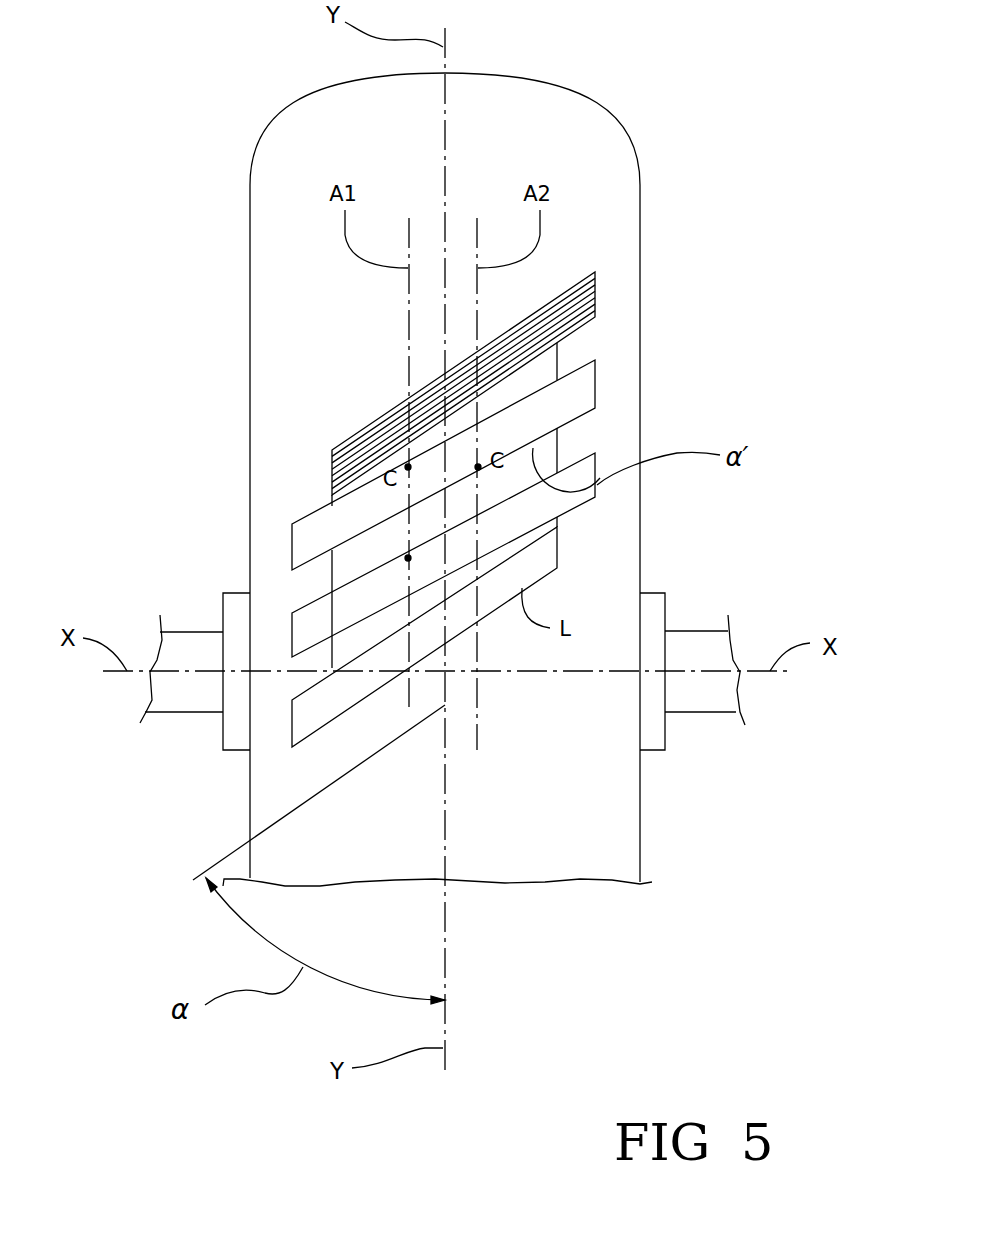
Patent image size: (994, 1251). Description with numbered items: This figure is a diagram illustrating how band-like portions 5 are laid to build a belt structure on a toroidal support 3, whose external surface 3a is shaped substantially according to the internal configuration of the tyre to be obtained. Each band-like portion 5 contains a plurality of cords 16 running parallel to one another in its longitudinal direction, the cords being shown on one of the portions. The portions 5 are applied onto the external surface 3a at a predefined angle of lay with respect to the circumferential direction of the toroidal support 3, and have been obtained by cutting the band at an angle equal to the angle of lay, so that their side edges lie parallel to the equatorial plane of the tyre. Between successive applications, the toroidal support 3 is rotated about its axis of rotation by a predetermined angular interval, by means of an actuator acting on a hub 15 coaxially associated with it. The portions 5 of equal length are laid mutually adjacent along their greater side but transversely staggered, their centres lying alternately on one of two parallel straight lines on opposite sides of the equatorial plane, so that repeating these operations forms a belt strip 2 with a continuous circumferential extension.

The belt strip 2 is at (356, 580).
The toroidal support 3 is at (469, 479).
The external surface 3a is at (598, 805).
The band-like portion 5 is at (265, 543).
The hub 15 is at (655, 610).
The cords 16 is at (595, 290).